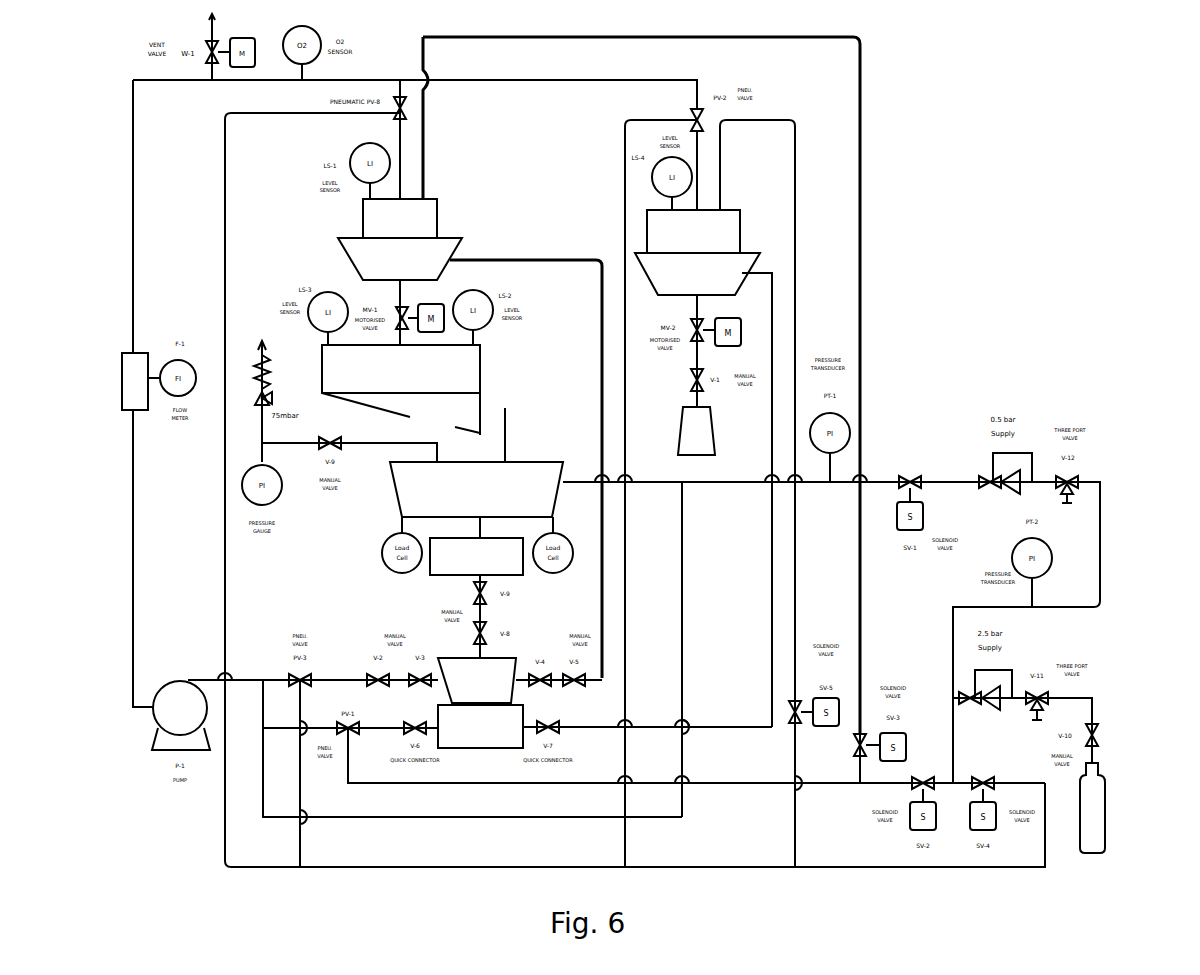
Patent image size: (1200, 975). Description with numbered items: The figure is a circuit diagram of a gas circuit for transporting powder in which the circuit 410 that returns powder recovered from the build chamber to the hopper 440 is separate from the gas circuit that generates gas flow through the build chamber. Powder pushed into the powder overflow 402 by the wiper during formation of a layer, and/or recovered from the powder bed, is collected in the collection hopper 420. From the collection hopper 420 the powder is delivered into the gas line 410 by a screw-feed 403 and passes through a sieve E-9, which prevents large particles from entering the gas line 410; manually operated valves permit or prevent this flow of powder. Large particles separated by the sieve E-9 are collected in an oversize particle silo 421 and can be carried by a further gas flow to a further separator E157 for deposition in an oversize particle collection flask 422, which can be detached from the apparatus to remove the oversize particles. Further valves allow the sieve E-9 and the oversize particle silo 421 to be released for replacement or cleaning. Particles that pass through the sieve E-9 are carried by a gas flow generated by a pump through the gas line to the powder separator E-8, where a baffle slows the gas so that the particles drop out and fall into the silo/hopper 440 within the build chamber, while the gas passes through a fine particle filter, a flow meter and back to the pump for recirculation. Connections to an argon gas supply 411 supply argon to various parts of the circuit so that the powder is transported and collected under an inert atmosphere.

The powder separator E-8 is at (418, 211).
The circuit for transporting powder 410 is at (532, 258).
The further separator E157 is at (740, 225).
The hopper 440 is at (440, 368).
The powder overflow 402 is at (475, 410).
The collection hopper 420 is at (395, 503).
The screw-feed 403 is at (430, 572).
The oversize particle collection flask 422 is at (702, 457).
The sieve E-9 is at (511, 665).
The oversize particle silo 421 is at (477, 750).
The argon gas supply 411 is at (1105, 802).